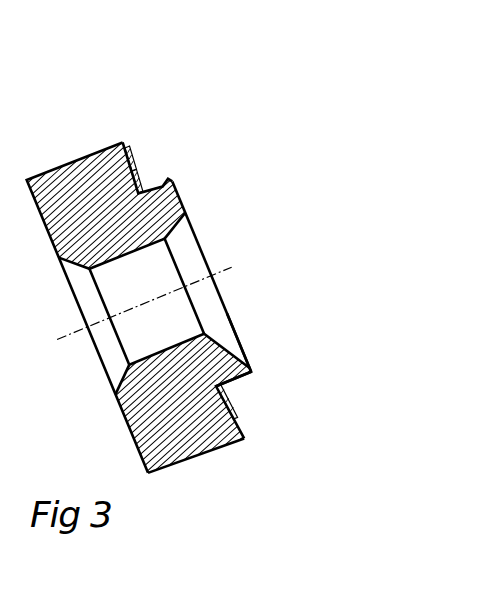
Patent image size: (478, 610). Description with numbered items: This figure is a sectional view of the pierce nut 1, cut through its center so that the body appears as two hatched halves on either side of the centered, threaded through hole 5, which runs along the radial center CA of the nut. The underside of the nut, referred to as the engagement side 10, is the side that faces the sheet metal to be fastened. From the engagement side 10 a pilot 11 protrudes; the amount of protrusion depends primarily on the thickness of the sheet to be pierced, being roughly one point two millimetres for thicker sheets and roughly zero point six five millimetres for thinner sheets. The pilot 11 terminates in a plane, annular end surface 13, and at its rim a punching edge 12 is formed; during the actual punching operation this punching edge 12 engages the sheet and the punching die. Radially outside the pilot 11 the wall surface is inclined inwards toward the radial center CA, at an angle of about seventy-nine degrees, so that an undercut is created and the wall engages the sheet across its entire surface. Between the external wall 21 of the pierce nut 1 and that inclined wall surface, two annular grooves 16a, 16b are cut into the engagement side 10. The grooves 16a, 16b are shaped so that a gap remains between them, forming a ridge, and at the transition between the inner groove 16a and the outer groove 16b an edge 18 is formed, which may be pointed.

The pierce nut 1 is at (224, 216).
The engagement side 10 is at (214, 251).
The pilot 11 is at (165, 188).
The punching edge 12 is at (250, 376).
The annular end surface 13 is at (248, 354).
The annular groove 16a is at (152, 182).
The annular groove 16b is at (143, 176).
The edge 18 is at (234, 394).
The external wall 21 is at (218, 458).
The threaded through hole 5 is at (138, 350).
The radial center CA is at (232, 270).